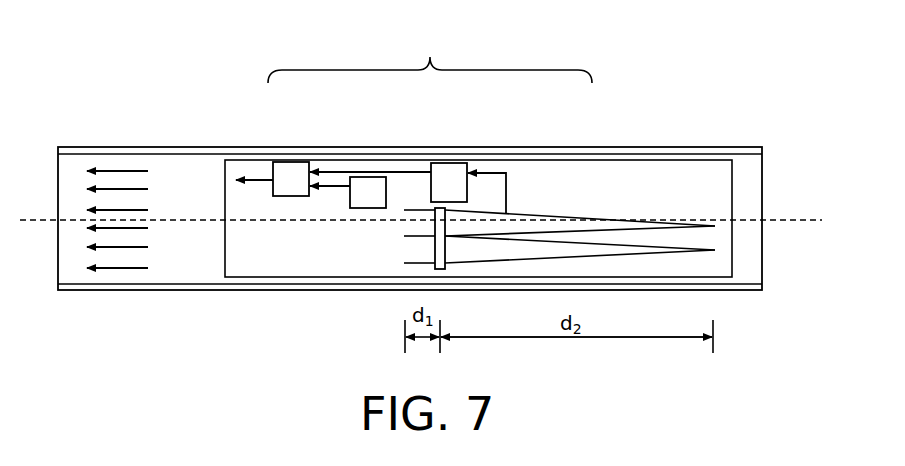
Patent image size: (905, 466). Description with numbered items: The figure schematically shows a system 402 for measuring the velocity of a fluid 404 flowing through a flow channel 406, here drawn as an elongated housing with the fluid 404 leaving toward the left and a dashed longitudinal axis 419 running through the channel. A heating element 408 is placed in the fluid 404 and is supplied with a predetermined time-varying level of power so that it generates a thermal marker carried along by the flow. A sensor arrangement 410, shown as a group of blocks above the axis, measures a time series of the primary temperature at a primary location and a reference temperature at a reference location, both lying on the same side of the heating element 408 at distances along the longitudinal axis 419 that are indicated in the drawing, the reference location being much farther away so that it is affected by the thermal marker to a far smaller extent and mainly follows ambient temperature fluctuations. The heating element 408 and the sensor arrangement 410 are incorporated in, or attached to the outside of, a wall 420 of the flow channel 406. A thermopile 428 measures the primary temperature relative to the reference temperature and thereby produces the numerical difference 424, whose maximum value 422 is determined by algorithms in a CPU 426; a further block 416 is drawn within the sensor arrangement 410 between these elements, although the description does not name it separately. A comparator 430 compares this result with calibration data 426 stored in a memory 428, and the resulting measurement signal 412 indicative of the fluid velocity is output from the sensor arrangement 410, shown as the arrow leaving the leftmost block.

The system 402 is at (276, 258).
The fluid 404 is at (205, 192).
The flow channel 406 is at (745, 290).
The heating element 408 is at (437, 247).
The sensor arrangement 410 is at (430, 55).
The measurement signal 412 is at (258, 178).
The detector 416 is at (450, 173).
The longitudinal axis 419 is at (798, 220).
The wall 420 is at (132, 290).
The maximum value 422 is at (342, 172).
The numerical difference 424 is at (492, 172).
The CPU 426 is at (337, 186).
The thermopile 428 is at (368, 185).
The comparator 430 is at (288, 172).